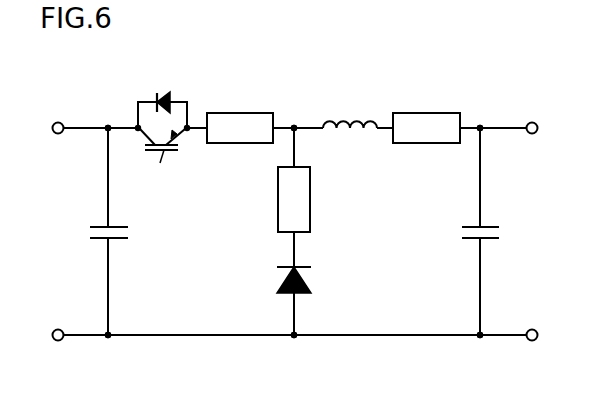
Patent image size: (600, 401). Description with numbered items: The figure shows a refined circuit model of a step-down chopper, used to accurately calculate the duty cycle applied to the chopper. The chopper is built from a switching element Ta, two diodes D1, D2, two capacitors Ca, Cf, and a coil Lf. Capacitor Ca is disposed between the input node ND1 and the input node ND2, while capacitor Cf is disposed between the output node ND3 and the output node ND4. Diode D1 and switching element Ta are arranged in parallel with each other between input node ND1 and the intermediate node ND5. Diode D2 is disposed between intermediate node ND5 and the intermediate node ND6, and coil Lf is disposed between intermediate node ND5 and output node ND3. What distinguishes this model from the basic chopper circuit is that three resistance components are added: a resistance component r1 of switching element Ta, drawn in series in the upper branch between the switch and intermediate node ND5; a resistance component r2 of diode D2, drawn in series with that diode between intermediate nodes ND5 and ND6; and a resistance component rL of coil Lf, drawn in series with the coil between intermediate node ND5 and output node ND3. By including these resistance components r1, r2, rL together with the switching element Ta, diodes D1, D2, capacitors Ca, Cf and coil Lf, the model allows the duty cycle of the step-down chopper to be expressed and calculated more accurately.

The diode D1 is at (161, 91).
The switching element Ta is at (162, 162).
The resistance component of switching element r1 is at (237, 112).
The coil Lf is at (356, 112).
The resistance component of coil rL is at (425, 112).
The capacitor Ca is at (118, 224).
The capacitor Cf is at (492, 224).
The resistance component of diode r2 is at (313, 199).
The diode D2 is at (308, 277).
The input node ND1 is at (108, 115).
The input node ND2 is at (108, 352).
The output node ND3 is at (485, 115).
The output node ND4 is at (484, 352).
The intermediate node ND5 is at (297, 115).
The intermediate node ND6 is at (298, 352).